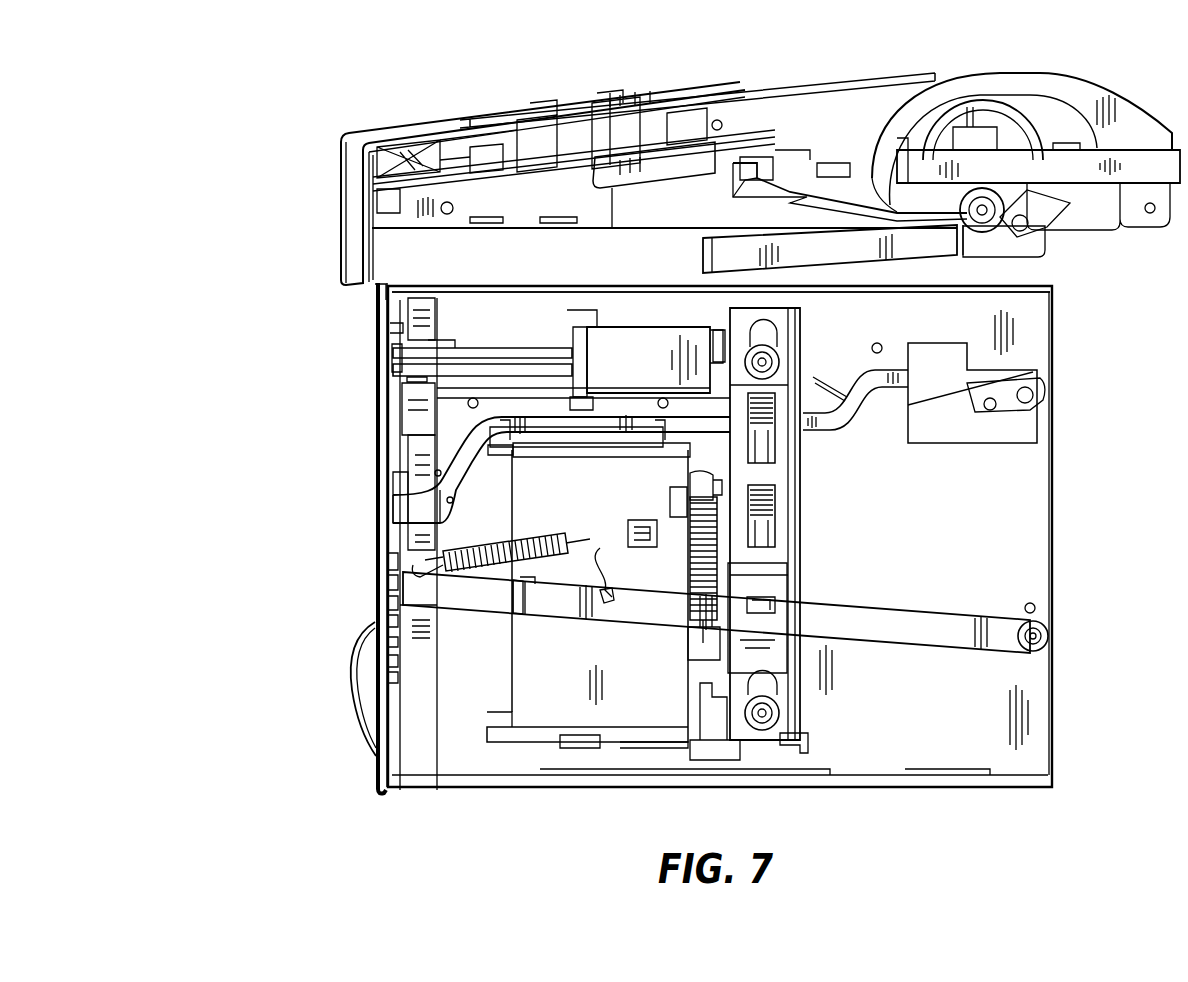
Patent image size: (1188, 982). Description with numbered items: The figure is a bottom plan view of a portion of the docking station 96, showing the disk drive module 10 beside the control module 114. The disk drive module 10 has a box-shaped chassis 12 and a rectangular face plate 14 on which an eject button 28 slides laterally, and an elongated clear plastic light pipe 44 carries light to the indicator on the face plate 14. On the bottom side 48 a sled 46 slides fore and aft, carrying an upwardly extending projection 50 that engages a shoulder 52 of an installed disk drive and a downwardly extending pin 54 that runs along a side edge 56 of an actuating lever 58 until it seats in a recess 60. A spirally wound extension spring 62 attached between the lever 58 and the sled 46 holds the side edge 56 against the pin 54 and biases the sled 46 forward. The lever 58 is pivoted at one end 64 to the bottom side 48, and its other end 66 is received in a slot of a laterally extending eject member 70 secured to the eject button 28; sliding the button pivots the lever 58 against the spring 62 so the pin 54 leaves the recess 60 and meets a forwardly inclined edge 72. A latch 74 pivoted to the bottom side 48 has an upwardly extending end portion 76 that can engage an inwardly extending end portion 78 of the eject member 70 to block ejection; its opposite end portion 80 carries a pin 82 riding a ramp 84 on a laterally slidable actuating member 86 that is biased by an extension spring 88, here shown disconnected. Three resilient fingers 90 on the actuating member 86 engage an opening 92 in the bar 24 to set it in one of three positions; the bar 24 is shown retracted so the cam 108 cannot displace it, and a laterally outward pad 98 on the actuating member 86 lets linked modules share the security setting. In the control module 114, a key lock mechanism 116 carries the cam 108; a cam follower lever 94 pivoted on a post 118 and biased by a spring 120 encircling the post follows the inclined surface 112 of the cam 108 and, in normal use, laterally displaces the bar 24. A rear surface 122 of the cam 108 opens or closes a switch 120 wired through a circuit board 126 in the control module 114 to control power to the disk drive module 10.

The disk drive module 10 is at (1062, 541).
The chassis 12 is at (1047, 296).
The face plate 14 is at (373, 760).
The bar 24 is at (800, 497).
The eject button 28 is at (360, 640).
The elongated clear plastic portion 44 is at (860, 375).
The sled 46 is at (513, 663).
The bottom side 48 is at (910, 538).
The projection 50 is at (692, 477).
The shoulder 52 is at (670, 494).
The pin 54 is at (522, 537).
The side edge 56 is at (548, 607).
The actuating lever 58 is at (933, 653).
The recess 60 is at (613, 597).
The extension spring 62 is at (527, 540).
The end 64 is at (1003, 613).
The end 66 is at (422, 607).
The eject member 70 is at (385, 578).
The inclined edge 72 is at (600, 548).
The latch 74 is at (550, 327).
The end portion 76 is at (398, 447).
The end portion 78 is at (403, 425).
The end portion 80 is at (700, 327).
The pin 82 is at (762, 345).
The ramp 84 is at (730, 325).
The actuating member 86 is at (727, 717).
The extension spring 88 is at (690, 605).
The resilient fingers 90 is at (773, 435).
The opening 92 is at (775, 608).
The cam follower lever 94 is at (785, 208).
The docking station 96 is at (287, 82).
The pad 98 is at (800, 752).
The cam 108 is at (873, 170).
The inclined surface 112 is at (738, 190).
The control module 114 is at (490, 118).
The key lock mechanism 116 is at (857, 97).
The post 118 is at (985, 232).
The spring; switch 120 is at (790, 130).
The rear surface 122 is at (877, 150).
The circuit board 126 is at (470, 182).